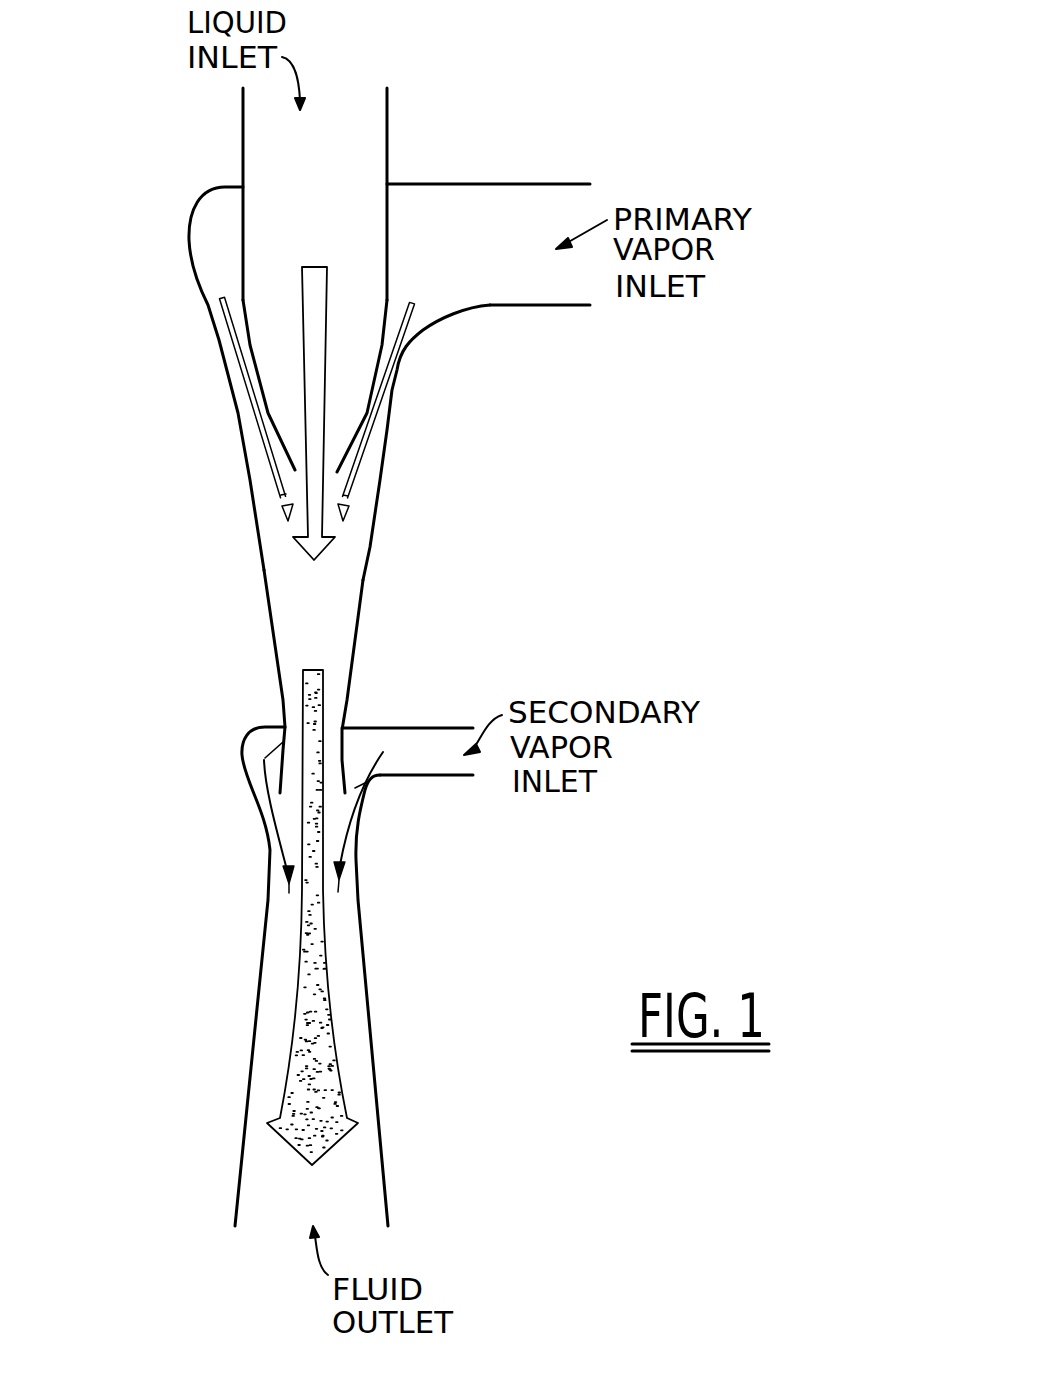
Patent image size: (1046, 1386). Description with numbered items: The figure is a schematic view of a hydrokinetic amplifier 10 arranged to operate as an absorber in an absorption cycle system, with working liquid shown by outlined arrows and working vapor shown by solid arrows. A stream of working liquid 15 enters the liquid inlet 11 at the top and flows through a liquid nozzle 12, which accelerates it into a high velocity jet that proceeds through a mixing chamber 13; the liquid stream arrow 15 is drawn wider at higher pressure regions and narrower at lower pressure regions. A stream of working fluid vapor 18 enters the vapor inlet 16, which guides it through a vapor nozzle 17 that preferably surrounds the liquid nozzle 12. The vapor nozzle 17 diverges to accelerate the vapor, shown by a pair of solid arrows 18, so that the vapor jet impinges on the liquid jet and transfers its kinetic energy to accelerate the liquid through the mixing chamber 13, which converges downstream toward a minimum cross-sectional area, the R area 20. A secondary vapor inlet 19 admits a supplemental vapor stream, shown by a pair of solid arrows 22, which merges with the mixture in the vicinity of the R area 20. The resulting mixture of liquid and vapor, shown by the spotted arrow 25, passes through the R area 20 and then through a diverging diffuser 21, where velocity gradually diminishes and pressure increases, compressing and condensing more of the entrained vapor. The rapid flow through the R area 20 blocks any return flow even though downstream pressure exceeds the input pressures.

The hydrokinetic amplifier 10 is at (493, 94).
The liquid inlet 11 is at (343, 113).
The liquid nozzle 12 is at (350, 420).
The mixing chamber 13 is at (365, 563).
The working liquid stream 15 is at (317, 265).
The vapor inlet 16 is at (560, 210).
The vapor nozzle 17 is at (392, 403).
The working fluid vapor stream 18 is at (222, 294).
The secondary vapor inlet 19 is at (467, 745).
The R area 20 is at (342, 742).
The diverging diffuser 21 is at (390, 1188).
The secondary vapor stream 22 is at (263, 760).
The liquid and vapor mixture arrow 25 is at (300, 1157).